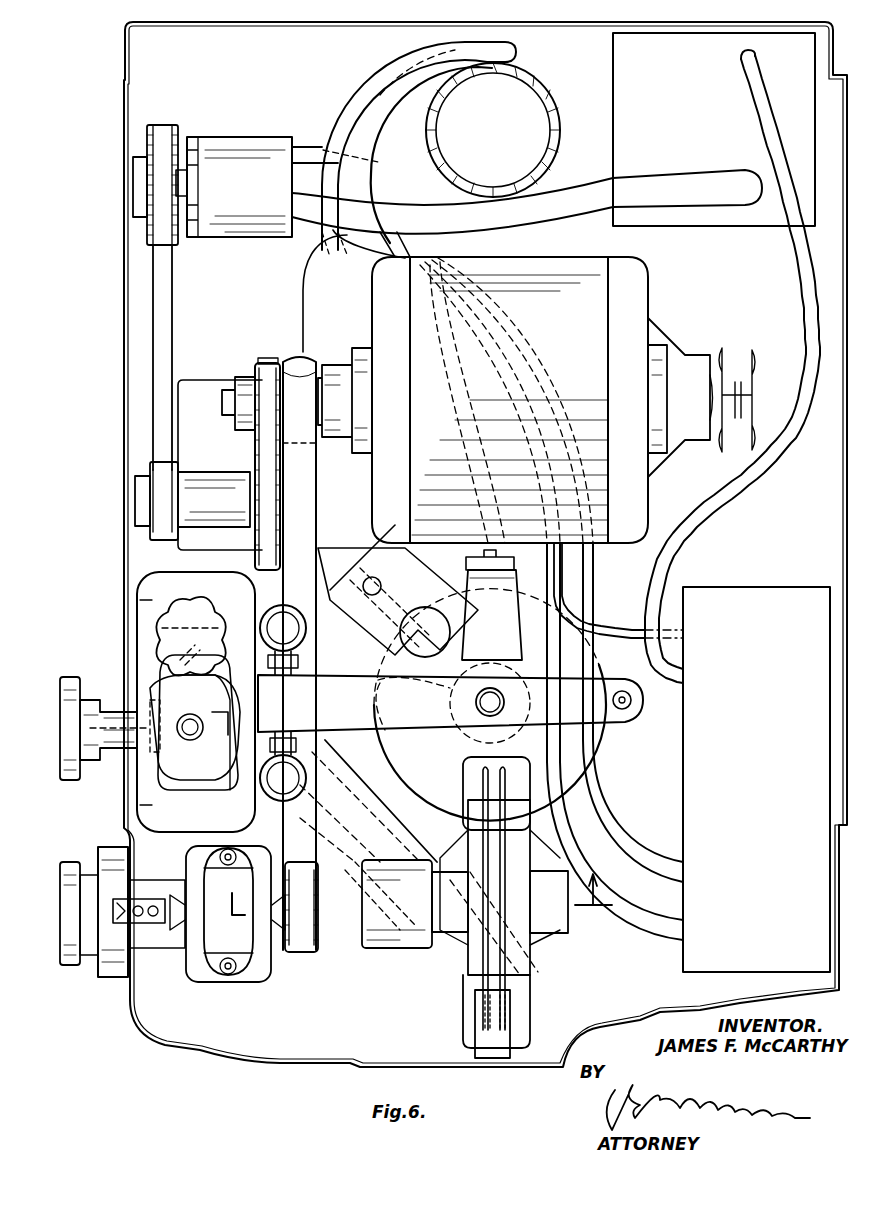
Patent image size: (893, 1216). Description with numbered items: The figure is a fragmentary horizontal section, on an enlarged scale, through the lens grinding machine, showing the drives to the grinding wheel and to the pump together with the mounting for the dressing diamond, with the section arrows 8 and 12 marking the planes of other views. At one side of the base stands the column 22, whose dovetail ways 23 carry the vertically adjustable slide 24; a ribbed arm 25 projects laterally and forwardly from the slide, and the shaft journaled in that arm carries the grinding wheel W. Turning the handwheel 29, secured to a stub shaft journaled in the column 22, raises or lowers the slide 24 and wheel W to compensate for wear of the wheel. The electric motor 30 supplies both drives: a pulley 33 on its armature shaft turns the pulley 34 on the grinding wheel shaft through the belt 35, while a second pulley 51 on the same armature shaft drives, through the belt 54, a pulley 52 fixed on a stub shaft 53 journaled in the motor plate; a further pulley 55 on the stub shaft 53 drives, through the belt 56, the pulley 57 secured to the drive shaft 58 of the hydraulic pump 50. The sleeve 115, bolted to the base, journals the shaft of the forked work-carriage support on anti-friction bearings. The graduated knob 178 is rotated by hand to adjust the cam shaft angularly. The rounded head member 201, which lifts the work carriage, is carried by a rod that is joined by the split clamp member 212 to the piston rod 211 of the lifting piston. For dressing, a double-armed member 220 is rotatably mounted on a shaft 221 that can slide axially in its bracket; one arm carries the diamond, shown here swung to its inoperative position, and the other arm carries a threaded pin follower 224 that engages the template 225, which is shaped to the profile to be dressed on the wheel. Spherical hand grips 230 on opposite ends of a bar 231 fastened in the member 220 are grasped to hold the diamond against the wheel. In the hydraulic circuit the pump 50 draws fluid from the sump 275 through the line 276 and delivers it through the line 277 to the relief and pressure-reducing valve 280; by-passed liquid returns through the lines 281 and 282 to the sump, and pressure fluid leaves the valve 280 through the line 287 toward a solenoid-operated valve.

The section line / shaft 8 is at (99, 693).
The section line / bracket 12 is at (345, 548).
The column 22 is at (150, 828).
The dove tail ways 23 is at (183, 798).
The slide 24 is at (232, 818).
The ribbed arm 25 is at (400, 838).
The handwheel 29 is at (72, 676).
The electric motor 30 is at (630, 292).
The pulley 33 is at (315, 360).
The pulley 34 is at (345, 945).
The belt 35 is at (303, 953).
The hydraulic pump 50 is at (258, 232).
The pulley 51 is at (248, 378).
The pulley 52 is at (256, 560).
The stub shaft 53 is at (253, 498).
The belt 54 is at (262, 345).
The pulley 55 is at (155, 538).
The belt 56 is at (168, 322).
The pulley 57 is at (173, 242).
The drive shaft 58 is at (184, 184).
The sleeve 115 is at (556, 138).
The knob 178 is at (112, 980).
The rounded head member 201 is at (405, 632).
The piston rod 211 is at (378, 590).
The split clamp member 212 is at (292, 650).
The double-armed member 220 is at (400, 722).
The shaft 221 is at (477, 702).
The follower 224 is at (630, 706).
The template 225 is at (468, 568).
The spherical hand grips 230 is at (276, 608).
The bar 231 is at (303, 706).
The sump 275 is at (622, 78).
The line 276 is at (590, 208).
The line 277 is at (372, 194).
The relief and pressure reducing valve 280 is at (747, 962).
The line 281 is at (646, 915).
The line 282 is at (712, 508).
The line 287 is at (628, 846).
The grinding wheel W is at (497, 800).